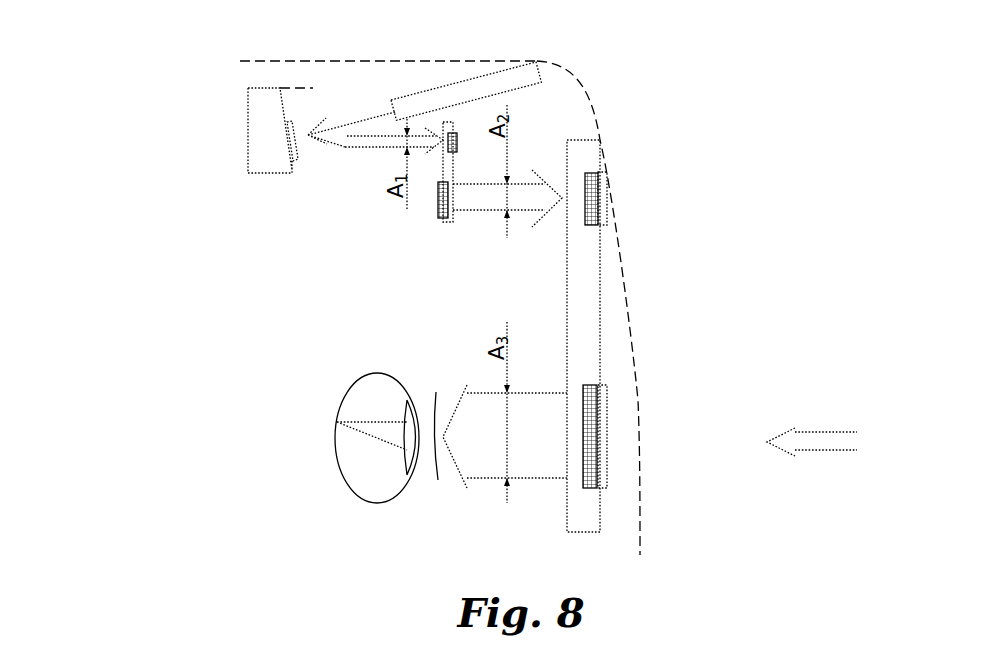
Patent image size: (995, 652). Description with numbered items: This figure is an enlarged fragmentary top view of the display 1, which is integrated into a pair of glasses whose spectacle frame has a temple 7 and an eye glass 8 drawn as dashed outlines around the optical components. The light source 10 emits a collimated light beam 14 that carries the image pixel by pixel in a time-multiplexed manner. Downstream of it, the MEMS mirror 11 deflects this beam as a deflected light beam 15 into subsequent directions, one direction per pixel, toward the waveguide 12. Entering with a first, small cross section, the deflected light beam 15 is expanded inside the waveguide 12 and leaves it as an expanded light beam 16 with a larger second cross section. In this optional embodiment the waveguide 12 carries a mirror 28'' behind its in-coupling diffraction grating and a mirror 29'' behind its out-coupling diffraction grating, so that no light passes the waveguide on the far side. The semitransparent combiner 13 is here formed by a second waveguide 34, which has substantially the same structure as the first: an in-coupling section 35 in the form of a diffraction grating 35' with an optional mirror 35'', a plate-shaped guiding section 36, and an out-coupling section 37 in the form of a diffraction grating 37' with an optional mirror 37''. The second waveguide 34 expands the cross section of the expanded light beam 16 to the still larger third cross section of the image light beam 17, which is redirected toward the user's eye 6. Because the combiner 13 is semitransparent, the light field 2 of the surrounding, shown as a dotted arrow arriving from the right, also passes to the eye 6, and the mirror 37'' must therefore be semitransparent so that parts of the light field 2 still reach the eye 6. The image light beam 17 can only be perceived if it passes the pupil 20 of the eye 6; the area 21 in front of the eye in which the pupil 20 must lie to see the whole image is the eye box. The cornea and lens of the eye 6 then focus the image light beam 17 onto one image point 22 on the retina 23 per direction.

The display 1 is at (837, 85).
The light field 2 is at (823, 437).
The user's eye 6 is at (302, 342).
The temple 7 is at (288, 72).
The eye glass 8 is at (596, 122).
The light source 10 is at (423, 103).
The MEMS mirror 11 is at (252, 153).
The waveguide 12 is at (443, 222).
The semitransparent combiner 13 is at (735, 266).
The collimated light beam 14 is at (362, 120).
The deflected light beam 15 is at (363, 143).
The expanded light beam 16 is at (478, 198).
The image light beam 17 is at (538, 457).
The pupil 20 is at (418, 430).
The area 21 is at (440, 473).
The image point 22 is at (337, 422).
The retina 23 is at (337, 457).
The mirror 28'' is at (472, 159).
The mirror 29'' is at (415, 211).
The second waveguide 34 is at (605, 322).
The in-coupling section 35 is at (674, 230).
The diffraction grating 35' is at (624, 172).
The mirror 35'' is at (637, 189).
The guiding section 36 is at (580, 325).
The out-coupling section 37 is at (681, 475).
The diffraction grating 37' is at (558, 419).
The mirror 37'' is at (618, 454).